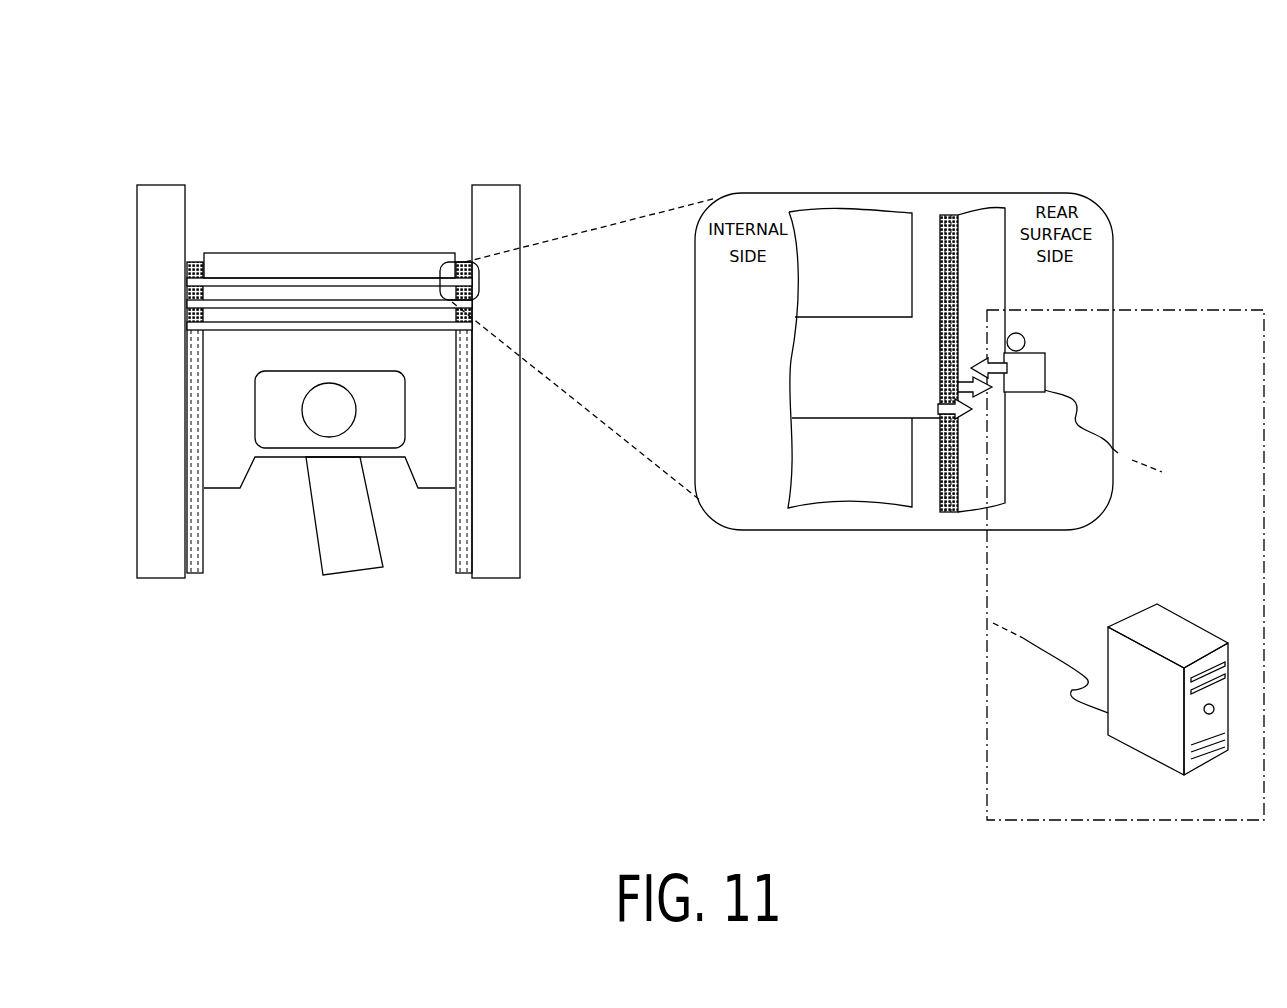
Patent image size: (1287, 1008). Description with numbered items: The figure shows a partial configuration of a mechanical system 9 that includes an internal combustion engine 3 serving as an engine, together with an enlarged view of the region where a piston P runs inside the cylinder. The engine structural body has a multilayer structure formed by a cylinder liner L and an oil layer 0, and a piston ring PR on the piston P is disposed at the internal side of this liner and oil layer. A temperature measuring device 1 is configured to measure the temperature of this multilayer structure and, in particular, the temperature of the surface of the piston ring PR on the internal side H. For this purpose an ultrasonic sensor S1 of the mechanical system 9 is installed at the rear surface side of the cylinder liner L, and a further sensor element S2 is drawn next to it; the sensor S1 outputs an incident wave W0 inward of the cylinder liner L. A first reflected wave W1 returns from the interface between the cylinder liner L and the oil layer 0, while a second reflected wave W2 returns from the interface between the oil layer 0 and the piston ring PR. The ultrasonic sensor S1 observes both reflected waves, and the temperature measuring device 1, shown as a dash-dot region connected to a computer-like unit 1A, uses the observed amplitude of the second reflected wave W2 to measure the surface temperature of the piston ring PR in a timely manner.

The internal combustion engine 3 is at (173, 119).
The mechanical system 9 is at (246, 68).
The piston P is at (340, 262).
The piston ring PR is at (403, 277).
The cylinder liner L is at (513, 207).
The oil layer 0 is at (462, 527).
The internal side H is at (952, 337).
The ultrasonic sensor S1 is at (1045, 375).
The second sensor S2 is at (1025, 338).
The incident wave W0 is at (997, 376).
The first reflected wave W1 is at (978, 398).
The second reflected wave W2 is at (962, 416).
The temperature measuring device 1 is at (988, 712).
The computer 1A is at (1188, 618).